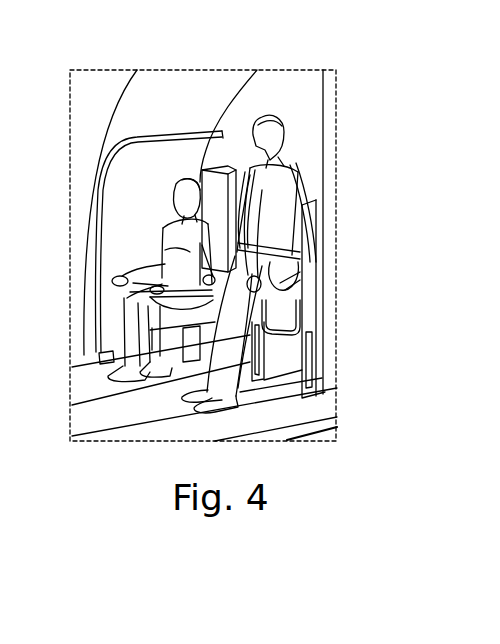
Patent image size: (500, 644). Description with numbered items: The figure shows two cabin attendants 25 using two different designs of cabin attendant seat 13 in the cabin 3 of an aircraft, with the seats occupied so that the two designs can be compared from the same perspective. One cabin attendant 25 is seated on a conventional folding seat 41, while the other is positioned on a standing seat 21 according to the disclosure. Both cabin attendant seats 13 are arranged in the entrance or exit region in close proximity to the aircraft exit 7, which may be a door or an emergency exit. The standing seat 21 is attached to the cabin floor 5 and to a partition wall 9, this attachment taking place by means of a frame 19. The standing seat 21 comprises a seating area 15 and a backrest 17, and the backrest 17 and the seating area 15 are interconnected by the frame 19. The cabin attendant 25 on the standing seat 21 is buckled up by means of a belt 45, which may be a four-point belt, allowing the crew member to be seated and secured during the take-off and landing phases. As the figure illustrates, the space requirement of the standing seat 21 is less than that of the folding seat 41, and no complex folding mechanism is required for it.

The cabin 3 is at (190, 90).
The cabin floor 5 is at (90, 435).
The aircraft exit 7 is at (90, 92).
The partition wall 9 is at (298, 92).
The cabin attendant seat 13 is at (320, 210).
The seating area 15 is at (300, 284).
The backrest 17 is at (303, 253).
The frame 19 is at (318, 332).
The standing seat 21 is at (312, 172).
The cabin attendant 25 is at (292, 162).
The folding seat 41 is at (216, 212).
The belt 45 is at (241, 166).